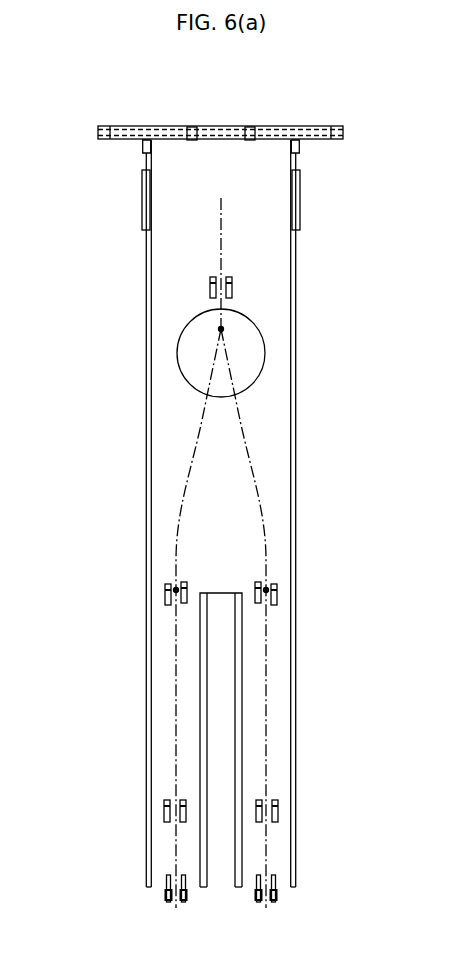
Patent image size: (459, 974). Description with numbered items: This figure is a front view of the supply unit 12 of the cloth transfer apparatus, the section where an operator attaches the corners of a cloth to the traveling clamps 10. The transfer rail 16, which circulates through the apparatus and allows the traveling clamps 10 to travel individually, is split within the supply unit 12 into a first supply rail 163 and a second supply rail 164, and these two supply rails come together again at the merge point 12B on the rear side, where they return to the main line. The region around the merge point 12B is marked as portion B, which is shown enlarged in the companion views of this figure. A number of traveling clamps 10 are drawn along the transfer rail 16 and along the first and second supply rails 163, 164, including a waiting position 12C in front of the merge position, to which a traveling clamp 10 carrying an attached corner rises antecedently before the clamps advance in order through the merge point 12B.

The supply unit 12 is at (263, 125).
The transfer rail 16 is at (221, 232).
The portion B is at (177, 336).
The merge point 12B is at (225, 330).
The waiting position 12C is at (173, 588).
The first supply rail 163 is at (176, 697).
The second supply rail 164 is at (268, 692).
The traveling clamp 10 is at (232, 288).